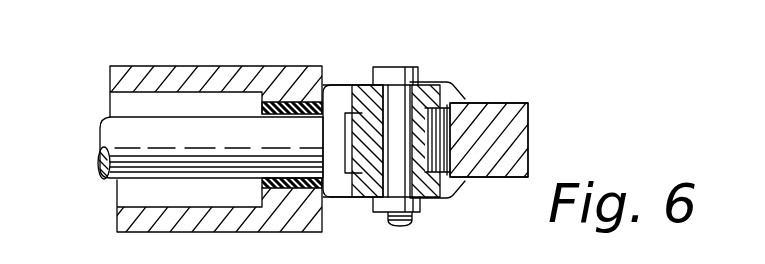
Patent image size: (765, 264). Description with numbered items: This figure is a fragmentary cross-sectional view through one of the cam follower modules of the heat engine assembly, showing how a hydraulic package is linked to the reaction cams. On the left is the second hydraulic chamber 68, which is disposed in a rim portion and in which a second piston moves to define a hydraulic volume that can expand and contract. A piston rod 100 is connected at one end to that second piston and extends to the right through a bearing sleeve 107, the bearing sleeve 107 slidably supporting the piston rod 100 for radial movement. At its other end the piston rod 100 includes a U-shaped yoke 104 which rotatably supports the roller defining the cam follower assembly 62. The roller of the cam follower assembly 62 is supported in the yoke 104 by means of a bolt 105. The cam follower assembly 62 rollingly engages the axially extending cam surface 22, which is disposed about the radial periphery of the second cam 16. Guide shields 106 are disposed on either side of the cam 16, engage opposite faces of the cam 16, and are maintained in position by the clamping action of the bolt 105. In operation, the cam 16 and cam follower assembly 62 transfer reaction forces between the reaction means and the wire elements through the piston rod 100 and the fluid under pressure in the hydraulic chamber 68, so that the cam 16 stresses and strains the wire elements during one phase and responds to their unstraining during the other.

The second cam 16 is at (510, 114).
The axially extending cam surface 22 is at (490, 108).
The cam follower assembly 62 is at (365, 116).
The second hydraulic chamber 68 is at (197, 93).
The piston rod 100 is at (123, 133).
The U-shaped yoke 104 is at (363, 194).
The bolt 105 is at (392, 73).
The guide shield 106 is at (452, 85).
The bearing sleeve 107 is at (300, 103).